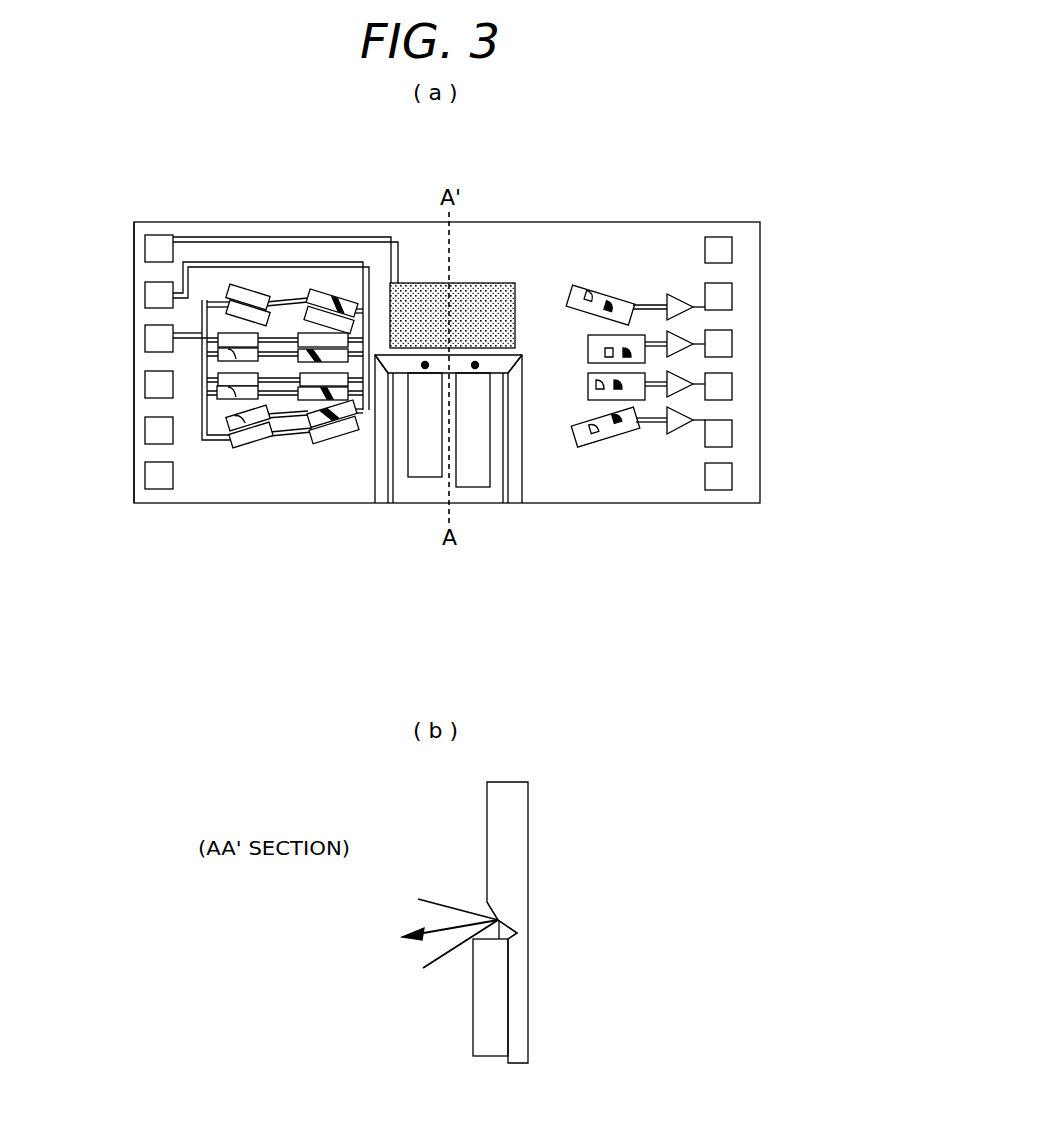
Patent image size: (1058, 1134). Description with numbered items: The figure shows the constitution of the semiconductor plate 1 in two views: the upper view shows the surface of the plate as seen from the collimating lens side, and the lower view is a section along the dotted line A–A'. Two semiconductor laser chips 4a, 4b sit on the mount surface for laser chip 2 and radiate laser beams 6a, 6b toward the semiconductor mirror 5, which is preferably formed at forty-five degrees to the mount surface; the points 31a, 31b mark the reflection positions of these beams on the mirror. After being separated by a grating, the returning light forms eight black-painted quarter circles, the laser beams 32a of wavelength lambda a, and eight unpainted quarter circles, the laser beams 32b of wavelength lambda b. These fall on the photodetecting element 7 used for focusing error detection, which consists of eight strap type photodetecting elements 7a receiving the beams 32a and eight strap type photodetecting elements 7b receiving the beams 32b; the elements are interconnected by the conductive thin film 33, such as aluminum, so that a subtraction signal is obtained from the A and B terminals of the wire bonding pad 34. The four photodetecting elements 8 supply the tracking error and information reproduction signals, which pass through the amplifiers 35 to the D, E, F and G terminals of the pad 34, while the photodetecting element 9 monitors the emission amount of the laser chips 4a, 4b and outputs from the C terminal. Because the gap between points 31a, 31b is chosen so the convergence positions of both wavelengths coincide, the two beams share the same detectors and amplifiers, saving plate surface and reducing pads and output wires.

The semiconductor plate 1 is at (688, 222).
The mount surface for laser chip 2 is at (497, 503).
The semiconductor laser chip 4a is at (472, 488).
The semiconductor laser chip 4b is at (425, 478).
The semiconductor mirror surface 5 is at (520, 355).
The laser beam 6a is at (415, 945).
The laser beam 6b is at (450, 930).
The photodetecting element 7 is at (278, 505).
The strap type photodetecting element 7a is at (327, 442).
The strap type photodetecting element 7b is at (249, 446).
The photodetecting element 8 is at (588, 446).
The photodetecting element 9 is at (405, 283).
The reflection position on semiconductor mirror surface 31a is at (476, 361).
The reflection position on semiconductor mirror surface 31b is at (425, 361).
The laser beam having wavelength λa 32a is at (333, 293).
The laser beam having wavelength λb 32b is at (264, 291).
The conductive thin film 33 is at (210, 263).
The pad 34 is at (134, 232).
The amplifier 35 is at (665, 436).